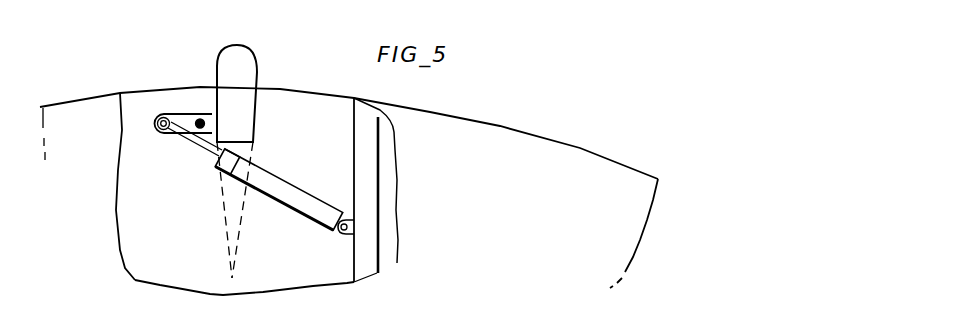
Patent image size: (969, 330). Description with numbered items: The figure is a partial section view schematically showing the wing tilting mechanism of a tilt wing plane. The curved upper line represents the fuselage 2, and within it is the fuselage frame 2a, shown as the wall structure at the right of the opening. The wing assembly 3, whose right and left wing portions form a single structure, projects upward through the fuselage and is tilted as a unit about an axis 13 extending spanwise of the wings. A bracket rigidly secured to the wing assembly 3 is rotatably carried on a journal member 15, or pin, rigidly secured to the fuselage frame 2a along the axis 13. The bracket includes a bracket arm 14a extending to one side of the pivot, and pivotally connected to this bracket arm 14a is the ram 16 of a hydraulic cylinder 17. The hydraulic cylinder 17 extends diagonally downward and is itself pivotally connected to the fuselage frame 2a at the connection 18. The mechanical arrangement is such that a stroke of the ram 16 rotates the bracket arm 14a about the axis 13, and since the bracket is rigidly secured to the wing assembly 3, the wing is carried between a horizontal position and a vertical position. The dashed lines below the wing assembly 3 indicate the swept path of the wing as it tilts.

The fuselage 2 is at (98, 90).
The fuselage frame 2a is at (368, 173).
The wing assembly 3 is at (243, 72).
The bracket arm 14a is at (178, 114).
The axis 13 is at (185, 135).
The journal member 15 is at (201, 117).
The ram 16 is at (205, 153).
The hydraulic cylinder 17 is at (283, 193).
The pivotal connection 18 is at (342, 235).